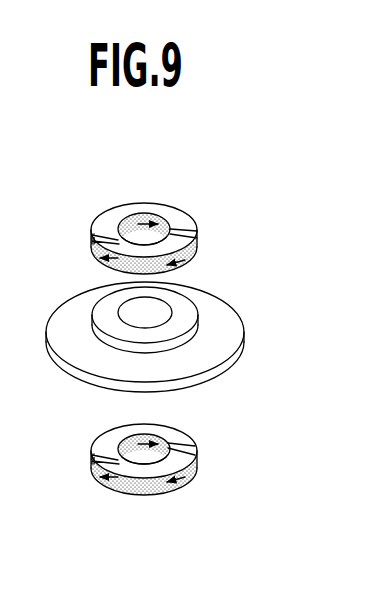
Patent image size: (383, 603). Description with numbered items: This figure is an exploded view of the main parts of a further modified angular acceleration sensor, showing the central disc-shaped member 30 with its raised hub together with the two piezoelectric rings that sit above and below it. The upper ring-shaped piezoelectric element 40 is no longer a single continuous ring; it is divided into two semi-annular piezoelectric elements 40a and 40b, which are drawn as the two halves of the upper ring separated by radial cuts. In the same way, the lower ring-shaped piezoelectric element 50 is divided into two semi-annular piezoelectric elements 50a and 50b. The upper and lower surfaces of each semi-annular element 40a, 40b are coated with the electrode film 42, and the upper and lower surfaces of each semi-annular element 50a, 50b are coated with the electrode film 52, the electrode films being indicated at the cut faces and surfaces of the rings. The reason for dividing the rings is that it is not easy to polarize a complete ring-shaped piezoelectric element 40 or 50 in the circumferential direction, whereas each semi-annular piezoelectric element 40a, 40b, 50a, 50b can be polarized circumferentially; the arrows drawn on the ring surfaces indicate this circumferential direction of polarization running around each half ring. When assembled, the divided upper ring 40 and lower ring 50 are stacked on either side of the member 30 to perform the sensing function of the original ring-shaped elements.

The disc 30 is at (68, 299).
The upper ring-shaped piezoelectric element 40 is at (137, 221).
The semi-annular piezoelectric element 40a is at (104, 211).
The semi-annular piezoelectric element 40b is at (197, 247).
The electrode film 42 is at (179, 210).
The lower ring-shaped piezoelectric element 50 is at (134, 468).
The semi-annular piezoelectric element 50a is at (96, 440).
The semi-annular piezoelectric element 50b is at (130, 494).
The electrode film 52 is at (170, 432).